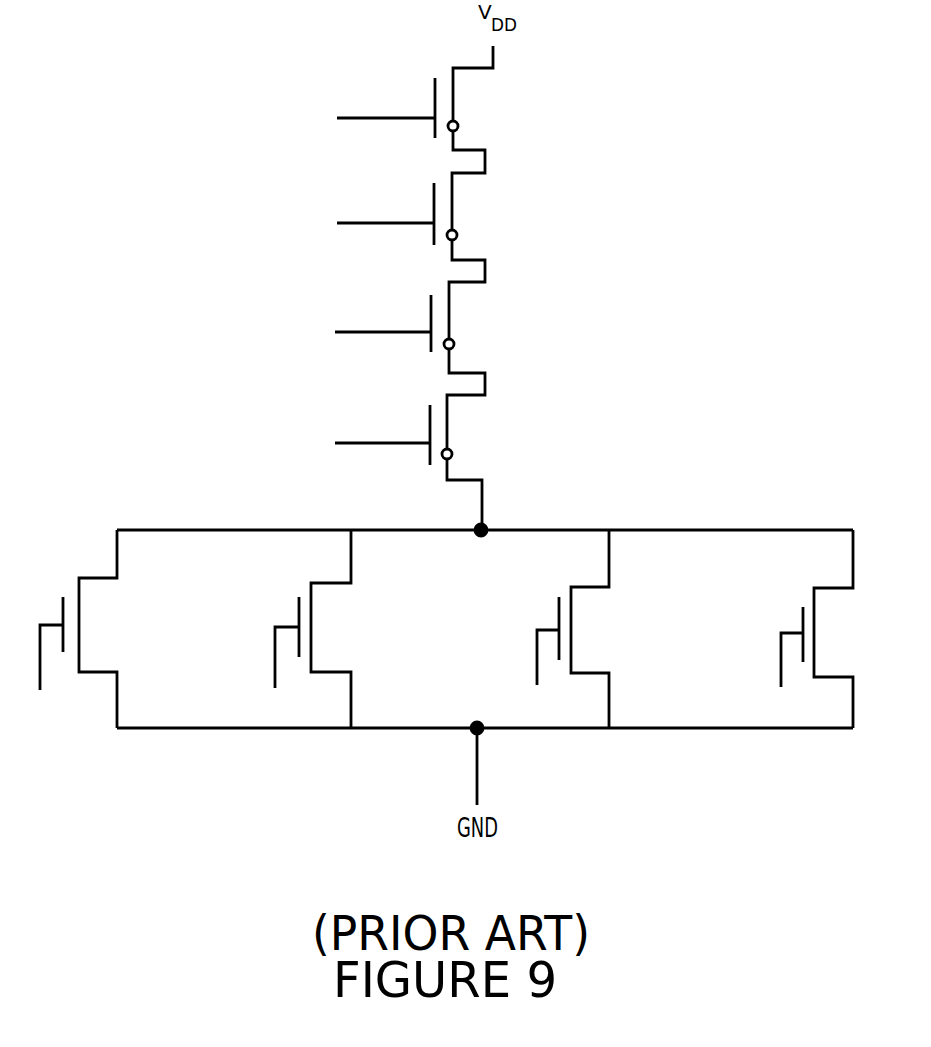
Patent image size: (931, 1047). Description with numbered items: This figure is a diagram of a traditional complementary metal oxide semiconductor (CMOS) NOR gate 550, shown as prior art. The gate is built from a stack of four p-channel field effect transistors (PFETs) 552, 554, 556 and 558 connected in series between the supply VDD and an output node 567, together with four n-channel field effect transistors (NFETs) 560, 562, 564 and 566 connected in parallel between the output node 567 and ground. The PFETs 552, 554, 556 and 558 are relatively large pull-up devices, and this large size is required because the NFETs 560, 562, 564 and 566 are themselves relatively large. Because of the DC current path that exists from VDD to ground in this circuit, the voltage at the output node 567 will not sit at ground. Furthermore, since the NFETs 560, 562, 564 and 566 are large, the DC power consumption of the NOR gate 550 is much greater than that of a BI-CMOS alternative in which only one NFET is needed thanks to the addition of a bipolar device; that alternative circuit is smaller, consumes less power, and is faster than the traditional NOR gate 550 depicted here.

The CMOS NOR gate 550 is at (697, 210).
The p-channel field effect transistor 552 is at (434, 100).
The p-channel field effect transistor 554 is at (433, 205).
The p-channel field effect transistor 556 is at (430, 316).
The p-channel field effect transistor 558 is at (430, 432).
The n-channel field effect transistor 560 is at (62, 608).
The n-channel field effect transistor 562 is at (297, 618).
The n-channel field effect transistor 564 is at (556, 617).
The n-channel field effect transistor 566 is at (800, 620).
The output node 567 is at (486, 525).